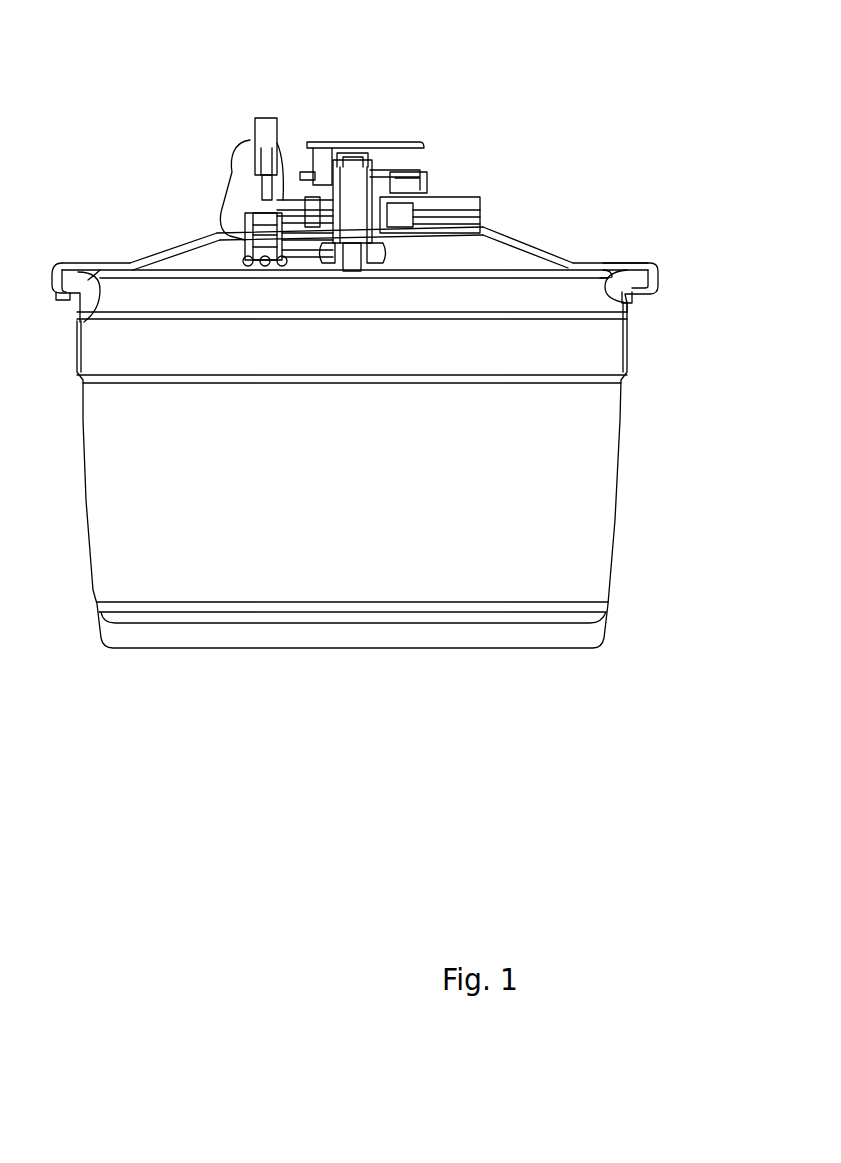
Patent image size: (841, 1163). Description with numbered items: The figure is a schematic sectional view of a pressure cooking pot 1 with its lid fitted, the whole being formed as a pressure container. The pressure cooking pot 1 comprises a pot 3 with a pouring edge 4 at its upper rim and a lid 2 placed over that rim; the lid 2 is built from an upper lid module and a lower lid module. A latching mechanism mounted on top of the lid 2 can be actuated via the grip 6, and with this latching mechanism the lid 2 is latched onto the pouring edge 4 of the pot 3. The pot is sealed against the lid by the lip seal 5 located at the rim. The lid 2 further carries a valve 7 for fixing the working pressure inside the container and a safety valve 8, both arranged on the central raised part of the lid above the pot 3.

The pressure cooking pot 1 is at (172, 753).
The lid 2 is at (510, 231).
The pot 3 is at (617, 550).
The pouring edge 4 is at (55, 303).
The lip seal 5 is at (637, 303).
The grip 6 is at (403, 145).
The valve 7 is at (353, 210).
The safety valve 8 is at (270, 220).